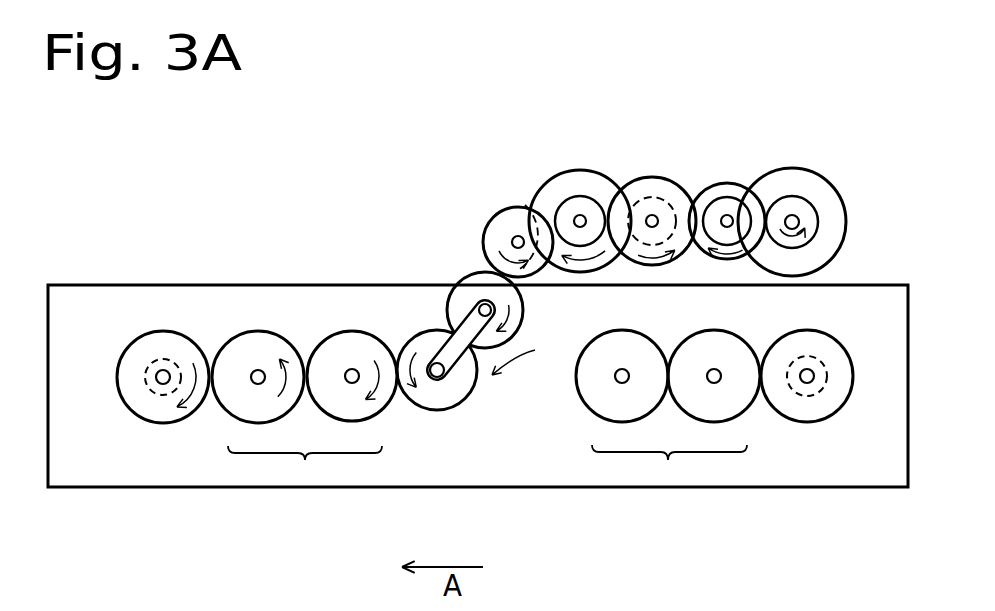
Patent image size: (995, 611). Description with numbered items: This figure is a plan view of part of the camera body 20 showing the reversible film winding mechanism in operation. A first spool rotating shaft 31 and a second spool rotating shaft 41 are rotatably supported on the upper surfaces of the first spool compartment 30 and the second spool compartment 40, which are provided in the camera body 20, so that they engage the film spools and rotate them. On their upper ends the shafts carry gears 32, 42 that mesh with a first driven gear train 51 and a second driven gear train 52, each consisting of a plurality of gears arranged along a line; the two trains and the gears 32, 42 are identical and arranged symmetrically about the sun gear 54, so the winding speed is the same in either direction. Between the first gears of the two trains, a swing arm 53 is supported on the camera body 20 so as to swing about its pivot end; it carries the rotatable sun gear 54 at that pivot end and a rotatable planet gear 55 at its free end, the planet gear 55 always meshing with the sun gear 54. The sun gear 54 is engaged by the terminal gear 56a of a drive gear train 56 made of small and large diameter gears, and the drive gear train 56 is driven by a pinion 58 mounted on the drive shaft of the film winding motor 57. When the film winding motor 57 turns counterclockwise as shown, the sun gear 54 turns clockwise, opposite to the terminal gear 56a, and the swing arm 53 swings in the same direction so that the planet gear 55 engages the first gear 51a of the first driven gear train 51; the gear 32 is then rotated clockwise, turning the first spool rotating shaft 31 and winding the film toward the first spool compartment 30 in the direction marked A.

The camera body 20 is at (240, 310).
The first spool compartment 30 is at (191, 498).
The first spool rotating shaft 31 is at (165, 358).
The gear 32 is at (165, 412).
The second spool compartment 40 is at (778, 495).
The second spool rotating shaft 41 is at (827, 376).
The gear 42 is at (815, 407).
The first driven gear train 51 is at (305, 460).
The first gear 51a is at (363, 340).
The second driven gear train 52 is at (668, 460).
The swing arm 53 is at (413, 337).
The sun gear 54 is at (470, 292).
The planet gear 55 is at (447, 395).
The drive gear train 56 is at (763, 162).
The terminal gear 56a is at (515, 223).
The film winding motor 57 is at (822, 240).
The pinion 58 is at (803, 208).